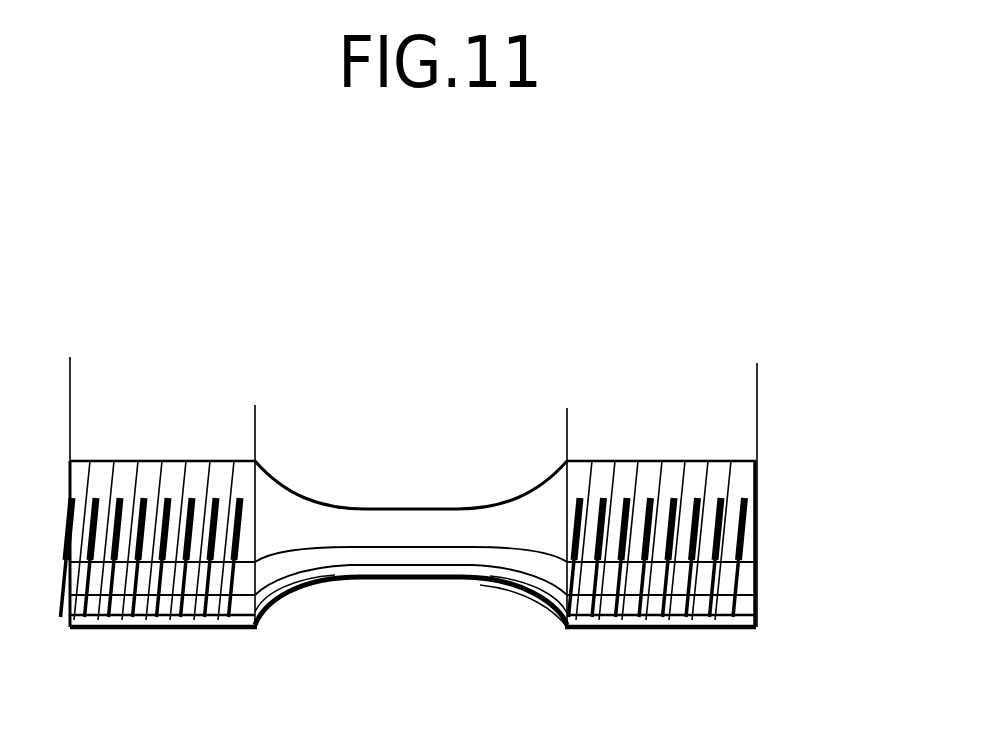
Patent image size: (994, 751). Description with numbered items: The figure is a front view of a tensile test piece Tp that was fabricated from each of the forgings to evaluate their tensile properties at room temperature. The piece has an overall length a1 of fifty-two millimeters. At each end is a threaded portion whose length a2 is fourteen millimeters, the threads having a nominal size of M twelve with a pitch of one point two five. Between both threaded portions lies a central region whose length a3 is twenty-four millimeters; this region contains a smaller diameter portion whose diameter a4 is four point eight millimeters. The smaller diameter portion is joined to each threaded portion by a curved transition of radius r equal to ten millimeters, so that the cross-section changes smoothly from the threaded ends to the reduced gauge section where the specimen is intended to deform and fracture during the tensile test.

The length a1 is at (757, 378).
The length of threaded portion a2 is at (757, 425).
The length between both the threaded portions a3 is at (567, 425).
The diameter of smaller diameter portion a4 is at (360, 463).
The radius r is at (477, 716).
The transfer pad Tp is at (761, 525).